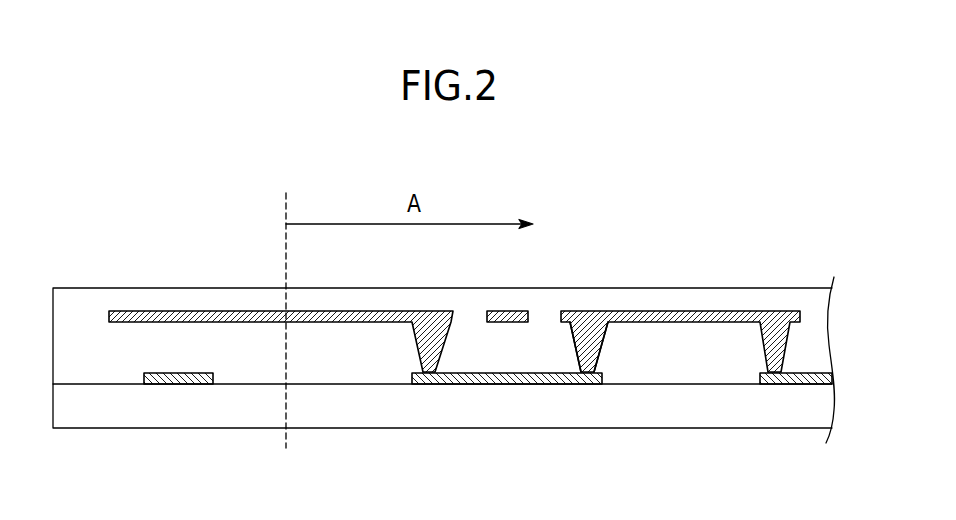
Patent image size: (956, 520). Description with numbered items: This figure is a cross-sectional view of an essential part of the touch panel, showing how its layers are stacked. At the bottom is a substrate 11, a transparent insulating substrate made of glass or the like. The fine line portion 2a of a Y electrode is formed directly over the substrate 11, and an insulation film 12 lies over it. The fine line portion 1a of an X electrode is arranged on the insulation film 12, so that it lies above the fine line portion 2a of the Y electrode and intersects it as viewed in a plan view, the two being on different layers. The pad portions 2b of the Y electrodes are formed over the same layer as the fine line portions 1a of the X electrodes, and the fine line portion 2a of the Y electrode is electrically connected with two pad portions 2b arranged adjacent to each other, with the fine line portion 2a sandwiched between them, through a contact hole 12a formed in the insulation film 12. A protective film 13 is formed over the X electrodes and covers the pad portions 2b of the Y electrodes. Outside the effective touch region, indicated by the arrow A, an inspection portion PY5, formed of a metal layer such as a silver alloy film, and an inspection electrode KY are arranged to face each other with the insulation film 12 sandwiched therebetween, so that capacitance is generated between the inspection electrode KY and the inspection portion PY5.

The inspection portion PY5 is at (146, 310).
The fine line portion of X electrode 1a is at (512, 310).
The fine line portion of Y electrode 2a is at (482, 385).
The pad portion of Y electrode 2b is at (660, 311).
The substrate 11 is at (210, 408).
The insulation film 12 is at (258, 366).
The contact hole 12a is at (598, 337).
The protective film 13 is at (758, 298).
The inspection electrode KY is at (157, 385).